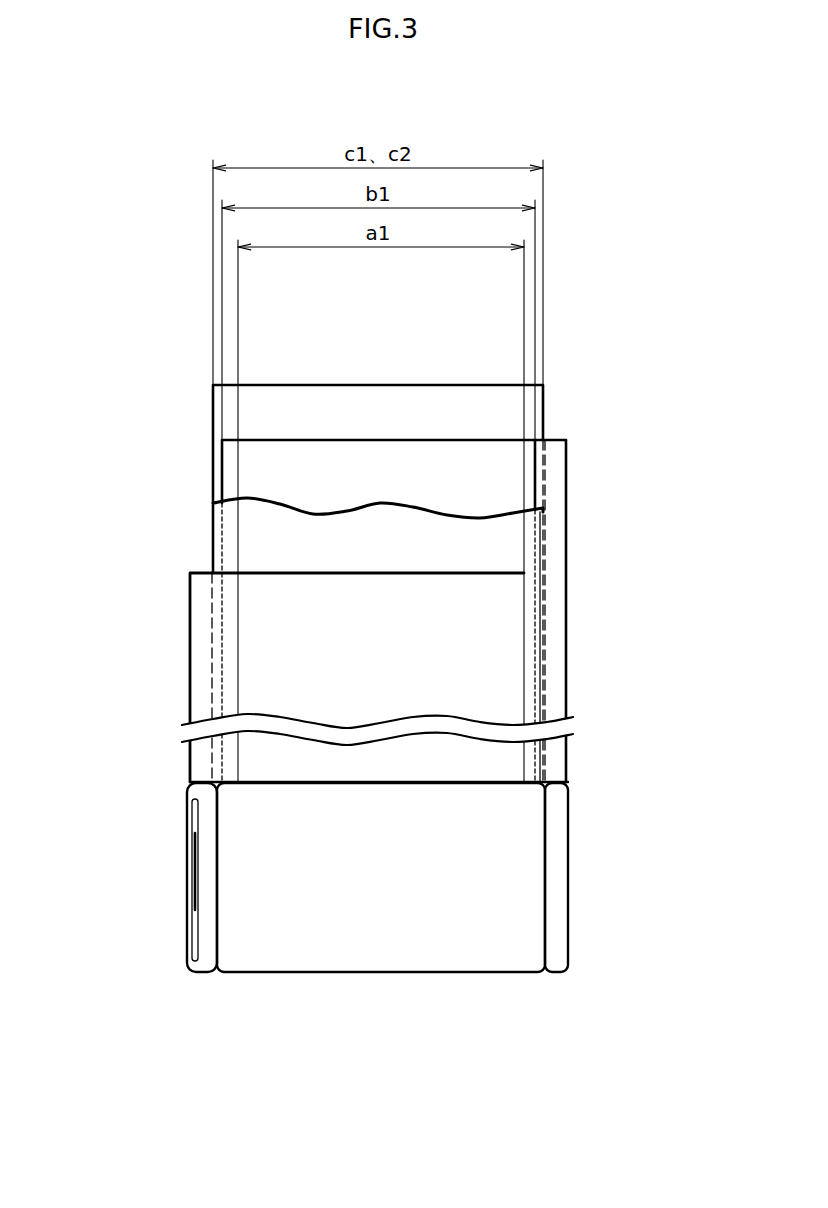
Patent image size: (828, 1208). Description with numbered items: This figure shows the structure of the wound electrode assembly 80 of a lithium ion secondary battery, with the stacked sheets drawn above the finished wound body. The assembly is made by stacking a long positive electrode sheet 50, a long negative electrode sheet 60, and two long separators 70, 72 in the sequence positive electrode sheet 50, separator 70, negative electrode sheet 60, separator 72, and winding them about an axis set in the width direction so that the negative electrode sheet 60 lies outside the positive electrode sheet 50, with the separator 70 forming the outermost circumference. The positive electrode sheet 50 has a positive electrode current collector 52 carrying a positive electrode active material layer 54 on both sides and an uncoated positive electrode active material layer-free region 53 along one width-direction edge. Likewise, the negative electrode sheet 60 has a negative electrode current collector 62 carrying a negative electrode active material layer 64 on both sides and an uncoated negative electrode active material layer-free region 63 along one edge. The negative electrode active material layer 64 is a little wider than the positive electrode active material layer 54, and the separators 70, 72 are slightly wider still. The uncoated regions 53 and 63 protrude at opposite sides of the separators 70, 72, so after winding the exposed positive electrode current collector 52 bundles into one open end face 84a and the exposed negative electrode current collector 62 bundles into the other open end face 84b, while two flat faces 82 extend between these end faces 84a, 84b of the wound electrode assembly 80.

The positive electrode sheet 50 is at (187, 625).
The positive electrode current collector 52 is at (367, 570).
The positive electrode active material layer-free region 53 is at (205, 690).
The positive electrode active material layer 54 is at (268, 670).
The negative electrode sheet 60 is at (570, 455).
The negative electrode current collector 62 is at (367, 440).
The negative electrode active material layer-free region 63 is at (550, 498).
The negative electrode active material layer 64 is at (468, 458).
The separator 70 is at (230, 412).
The separator 72 is at (230, 545).
The wound electrode assembly 80 is at (372, 909).
The flat face 82 is at (500, 948).
The end face 84a is at (188, 912).
The end face 84b is at (570, 913).